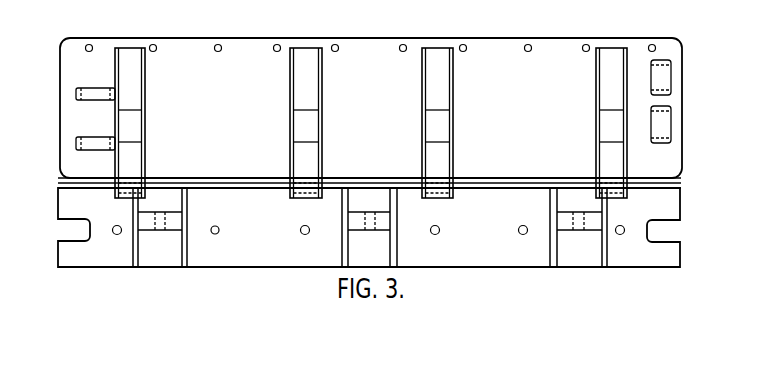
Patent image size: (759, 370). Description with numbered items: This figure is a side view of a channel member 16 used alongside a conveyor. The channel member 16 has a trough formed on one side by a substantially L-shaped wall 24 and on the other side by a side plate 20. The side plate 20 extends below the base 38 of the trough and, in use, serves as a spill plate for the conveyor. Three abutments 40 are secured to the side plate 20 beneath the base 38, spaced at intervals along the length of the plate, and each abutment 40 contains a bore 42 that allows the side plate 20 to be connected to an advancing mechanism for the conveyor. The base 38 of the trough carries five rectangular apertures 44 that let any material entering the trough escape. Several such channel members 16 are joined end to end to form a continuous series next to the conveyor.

The channel member 16 is at (224, 36).
The side plate 20 is at (105, 258).
The wall 24 is at (388, 107).
The base 38 is at (345, 179).
The abutment 40 is at (175, 222).
The bore 42 is at (182, 233).
The aperture 44 is at (250, 183).